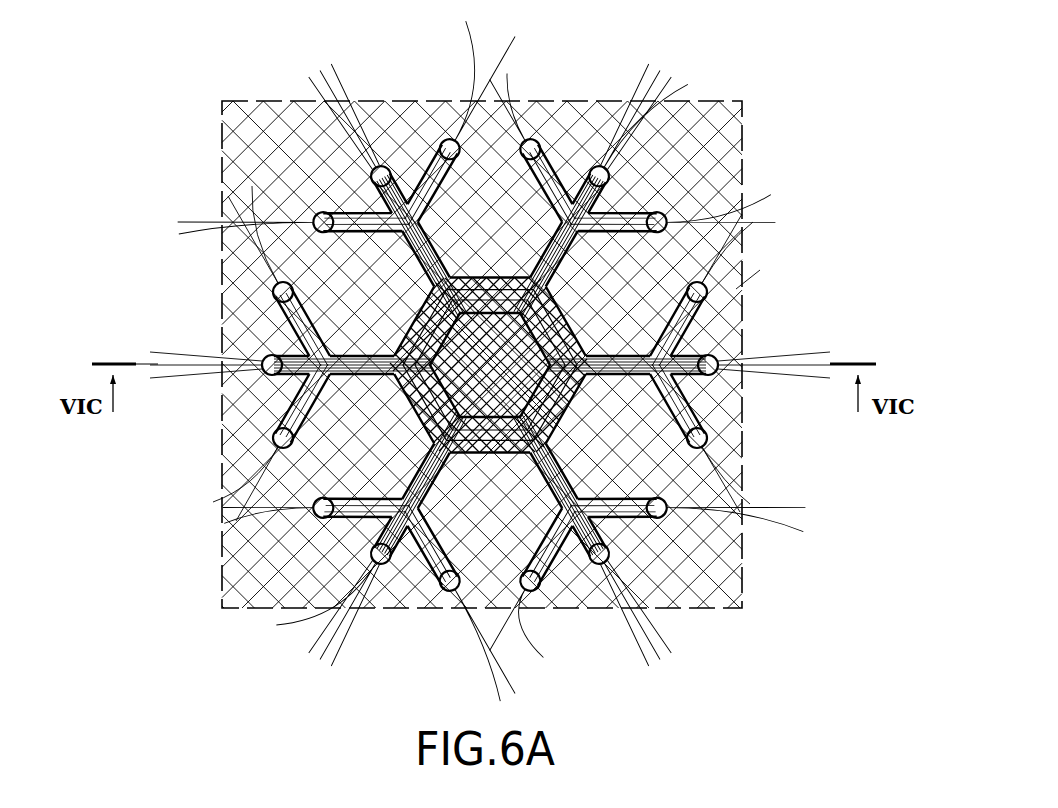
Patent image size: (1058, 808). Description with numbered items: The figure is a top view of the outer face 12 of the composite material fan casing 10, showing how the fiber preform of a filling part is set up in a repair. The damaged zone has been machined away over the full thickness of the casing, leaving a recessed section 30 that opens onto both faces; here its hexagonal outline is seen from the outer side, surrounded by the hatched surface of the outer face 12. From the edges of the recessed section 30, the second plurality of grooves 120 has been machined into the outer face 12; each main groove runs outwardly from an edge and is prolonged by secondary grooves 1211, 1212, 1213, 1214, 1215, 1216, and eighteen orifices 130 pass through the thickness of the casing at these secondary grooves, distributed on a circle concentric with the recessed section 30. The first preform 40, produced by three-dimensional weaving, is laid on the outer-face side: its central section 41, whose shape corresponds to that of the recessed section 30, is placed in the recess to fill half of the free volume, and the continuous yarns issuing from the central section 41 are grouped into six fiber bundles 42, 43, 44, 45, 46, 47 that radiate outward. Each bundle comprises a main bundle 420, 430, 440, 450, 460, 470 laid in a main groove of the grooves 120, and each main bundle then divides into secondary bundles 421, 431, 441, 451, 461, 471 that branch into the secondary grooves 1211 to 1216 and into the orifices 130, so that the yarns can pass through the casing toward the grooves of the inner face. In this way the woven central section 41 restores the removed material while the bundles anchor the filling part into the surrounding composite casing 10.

The fan casing 10 is at (743, 140).
The outer face 12 is at (718, 128).
The second plurality of grooves 120 is at (400, 485).
The orifices 130 is at (736, 289).
The recessed section 30 is at (347, 456).
The first preform 40 is at (430, 112).
The central section 41 is at (437, 322).
The fiber bundle 42 is at (287, 376).
The main bundle 420 is at (371, 368).
The secondary bundles 421 is at (198, 367).
The fiber bundle 43 is at (361, 165).
The main bundle 430 is at (420, 258).
The secondary bundles 431 is at (326, 84).
The fiber bundle 44 is at (616, 187).
The main bundle 440 is at (545, 252).
The secondary bundles 441 is at (500, 52).
The fiber bundle 45 is at (689, 363).
The main bundle 450 is at (609, 376).
The secondary bundles 451 is at (712, 462).
The fiber bundle 46 is at (631, 550).
The main bundle 460 is at (613, 515).
The secondary bundles 461 is at (648, 638).
The fiber bundle 47 is at (389, 547).
The main bundle 470 is at (442, 543).
The secondary bundles 471 is at (343, 622).
The secondary groove 1211 is at (287, 352).
The secondary groove 1212 is at (326, 200).
The secondary groove 1213 is at (645, 142).
The secondary groove 1214 is at (732, 342).
The secondary groove 1215 is at (556, 606).
The secondary groove 1216 is at (444, 481).